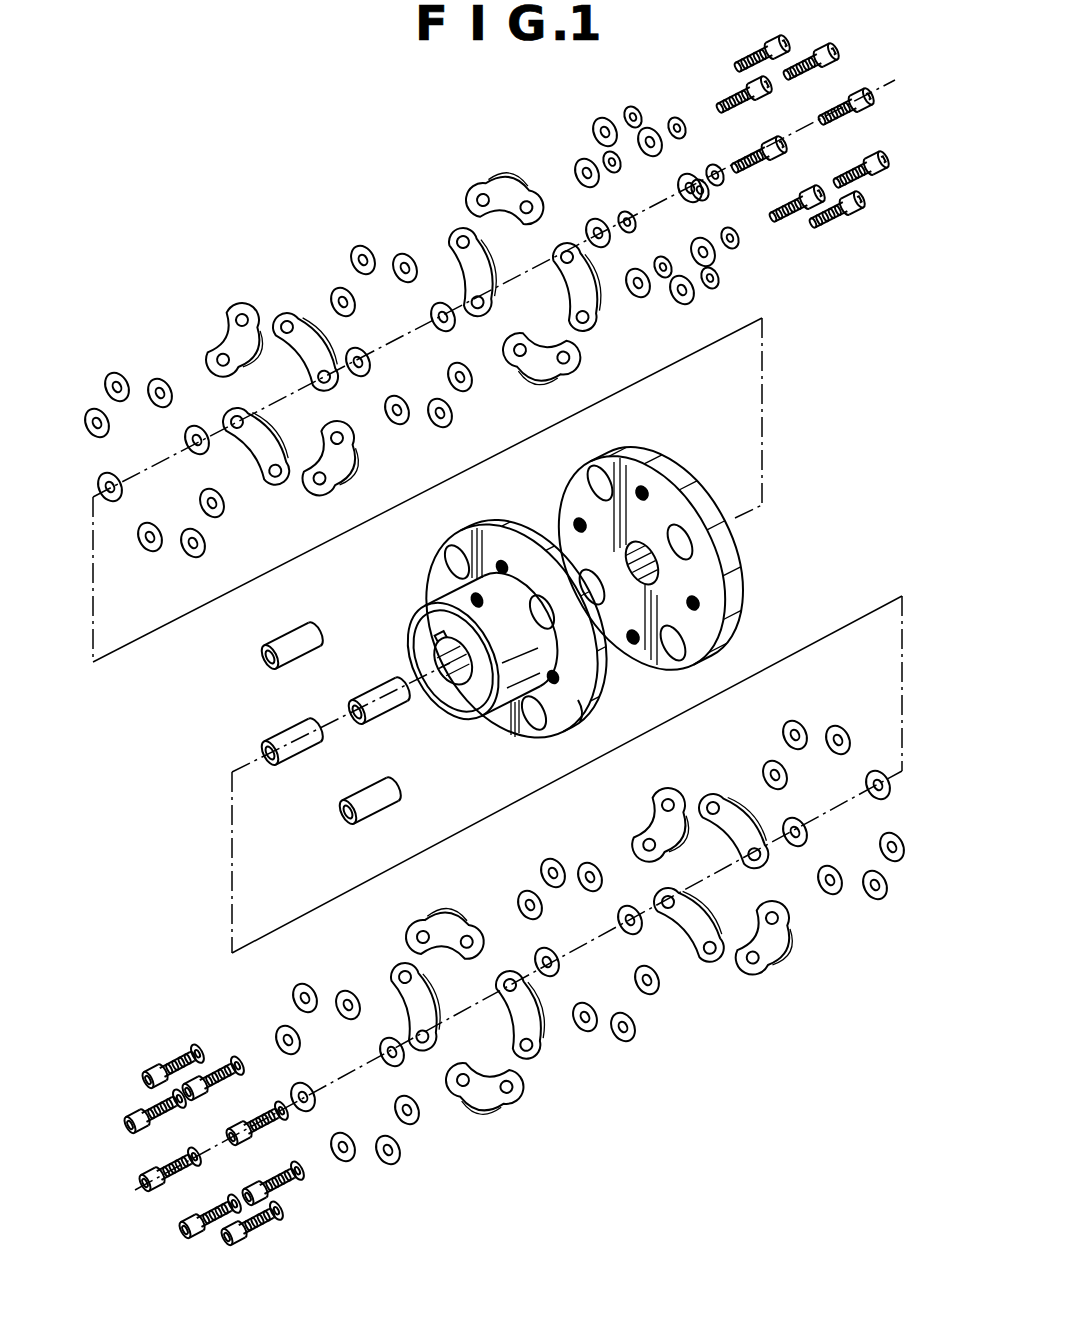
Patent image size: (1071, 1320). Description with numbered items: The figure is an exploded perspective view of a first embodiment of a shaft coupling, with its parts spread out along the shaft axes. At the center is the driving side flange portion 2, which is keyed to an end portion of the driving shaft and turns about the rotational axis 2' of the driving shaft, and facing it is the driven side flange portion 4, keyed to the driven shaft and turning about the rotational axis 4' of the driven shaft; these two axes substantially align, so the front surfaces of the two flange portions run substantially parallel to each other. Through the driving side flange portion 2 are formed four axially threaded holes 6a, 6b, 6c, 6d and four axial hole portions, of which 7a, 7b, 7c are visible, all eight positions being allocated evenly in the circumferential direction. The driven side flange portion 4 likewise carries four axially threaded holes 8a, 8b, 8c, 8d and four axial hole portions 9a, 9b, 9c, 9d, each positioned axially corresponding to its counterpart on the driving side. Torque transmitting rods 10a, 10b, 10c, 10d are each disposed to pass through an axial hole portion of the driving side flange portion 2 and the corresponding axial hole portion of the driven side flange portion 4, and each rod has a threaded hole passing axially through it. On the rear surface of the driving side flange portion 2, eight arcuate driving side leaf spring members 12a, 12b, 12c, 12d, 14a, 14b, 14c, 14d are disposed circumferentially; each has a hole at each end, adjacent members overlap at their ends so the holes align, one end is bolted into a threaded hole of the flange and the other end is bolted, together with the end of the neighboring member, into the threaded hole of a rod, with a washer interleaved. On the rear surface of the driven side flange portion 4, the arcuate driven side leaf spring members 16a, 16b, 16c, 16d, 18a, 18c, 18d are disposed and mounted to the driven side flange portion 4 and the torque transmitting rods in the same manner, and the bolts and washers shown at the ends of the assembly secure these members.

The driving side flange portion 2 is at (503, 635).
The rotational axis of the driving shaft 2' is at (417, 658).
The driven side flange portion 4 is at (642, 556).
The rotational axis of the driven shaft 4' is at (683, 541).
The axially threaded hole 6a is at (460, 548).
The axially threaded hole 6b is at (580, 712).
The axially threaded hole 6c is at (512, 722).
The axially threaded hole 6d is at (432, 597).
The axial hole portion 7a is at (443, 556).
The axial hole portion 7b is at (504, 562).
The axial hole portion 7c is at (528, 725).
The axially threaded hole 8a is at (646, 490).
The axially threaded hole 8b is at (699, 603).
The axially threaded hole 8c is at (636, 644).
The axially threaded hole 8d is at (578, 520).
The axial hole portion 9a is at (598, 468).
The axial hole portion 9b is at (692, 545).
The axial hole portion 9c is at (688, 640).
The axial hole portion 9d is at (594, 606).
The torque transmitting rod 10a is at (278, 670).
The torque transmitting rod 10b is at (392, 712).
The torque transmitting rod 10c is at (372, 818).
The torque transmitting rod 10d is at (288, 765).
The driving side leaf spring member 12a is at (726, 795).
The driving side leaf spring member 12b is at (782, 934).
The driving side leaf spring member 12c is at (692, 962).
The driving side leaf spring member 12d is at (648, 812).
The driving side leaf spring member 14a is at (456, 918).
The driving side leaf spring member 14b is at (545, 1052).
The driving side leaf spring member 14c is at (487, 1100).
The driving side leaf spring member 14d is at (392, 985).
The driven side leaf spring member 16a is at (285, 310).
The driven side leaf spring member 16b is at (358, 455).
The driven side leaf spring member 16c is at (270, 485).
The driven side leaf spring member 16d is at (238, 305).
The driven side leaf spring member 18a is at (487, 183).
The driven side leaf spring member 18c is at (514, 368).
The driven side leaf spring member 18d is at (456, 236).